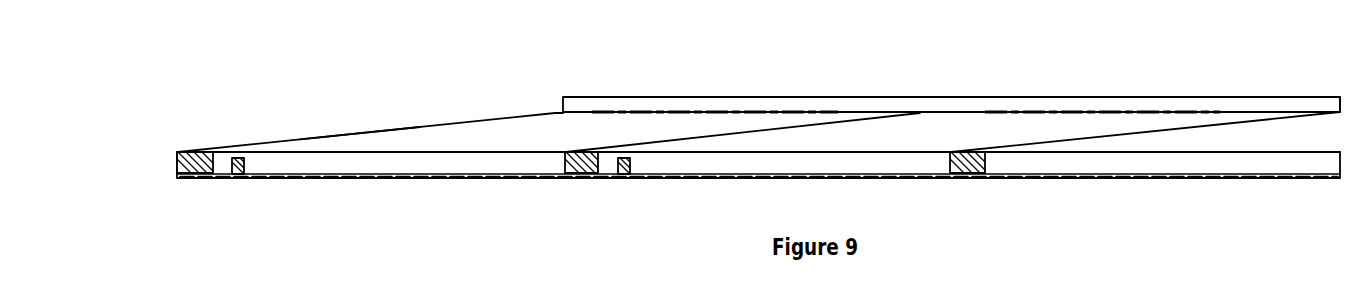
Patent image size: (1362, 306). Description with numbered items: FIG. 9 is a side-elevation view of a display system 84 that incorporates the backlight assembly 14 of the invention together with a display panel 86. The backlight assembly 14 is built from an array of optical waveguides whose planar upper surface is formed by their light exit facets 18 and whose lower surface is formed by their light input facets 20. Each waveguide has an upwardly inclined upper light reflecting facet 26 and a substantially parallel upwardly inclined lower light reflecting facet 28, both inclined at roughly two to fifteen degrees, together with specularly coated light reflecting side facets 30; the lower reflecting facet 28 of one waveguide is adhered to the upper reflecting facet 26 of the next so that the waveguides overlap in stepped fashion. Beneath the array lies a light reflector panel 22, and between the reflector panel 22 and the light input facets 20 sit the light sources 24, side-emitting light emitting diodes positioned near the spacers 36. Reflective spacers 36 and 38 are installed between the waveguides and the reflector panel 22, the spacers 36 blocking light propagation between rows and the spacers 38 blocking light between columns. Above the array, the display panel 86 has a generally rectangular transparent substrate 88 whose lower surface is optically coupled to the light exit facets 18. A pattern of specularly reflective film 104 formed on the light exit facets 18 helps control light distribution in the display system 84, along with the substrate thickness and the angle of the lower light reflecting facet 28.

The backlight assembly 14 is at (258, 108).
The light exit facet 18 is at (865, 110).
The light input facet 20 is at (423, 155).
The light reflector panel 22 is at (1080, 177).
The light sources 24 is at (238, 180).
The upper light reflecting facet 26 is at (405, 128).
The lower light reflecting facet 28 is at (1143, 135).
The light reflecting side facet 30 is at (492, 133).
The spacers 36 is at (188, 180).
The spacers 38 is at (1207, 163).
The display system 84 is at (403, 63).
The display panel 86 is at (630, 92).
The substrate 88 is at (1273, 108).
The specularly reflective film 104 is at (717, 110).